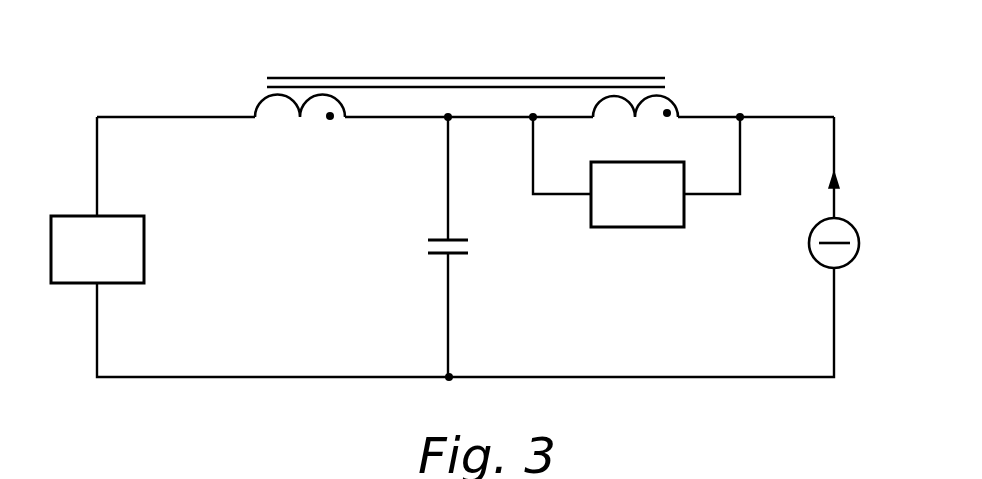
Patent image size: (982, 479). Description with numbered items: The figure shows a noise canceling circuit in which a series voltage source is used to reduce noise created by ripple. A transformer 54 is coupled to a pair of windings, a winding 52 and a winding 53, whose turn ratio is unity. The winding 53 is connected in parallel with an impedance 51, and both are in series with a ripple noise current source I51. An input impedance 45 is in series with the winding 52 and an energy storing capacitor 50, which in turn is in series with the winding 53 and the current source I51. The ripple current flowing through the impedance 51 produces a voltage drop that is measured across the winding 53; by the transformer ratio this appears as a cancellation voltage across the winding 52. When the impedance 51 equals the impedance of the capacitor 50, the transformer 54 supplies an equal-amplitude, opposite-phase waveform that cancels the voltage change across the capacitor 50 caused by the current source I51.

The transformer 54 is at (487, 78).
The winding 52 is at (303, 110).
The winding 53 is at (677, 103).
The input impedance 45 is at (144, 240).
The energy storing capacitor 50 is at (468, 255).
The impedance 51 is at (637, 227).
The ripple noise current source I51 is at (856, 262).